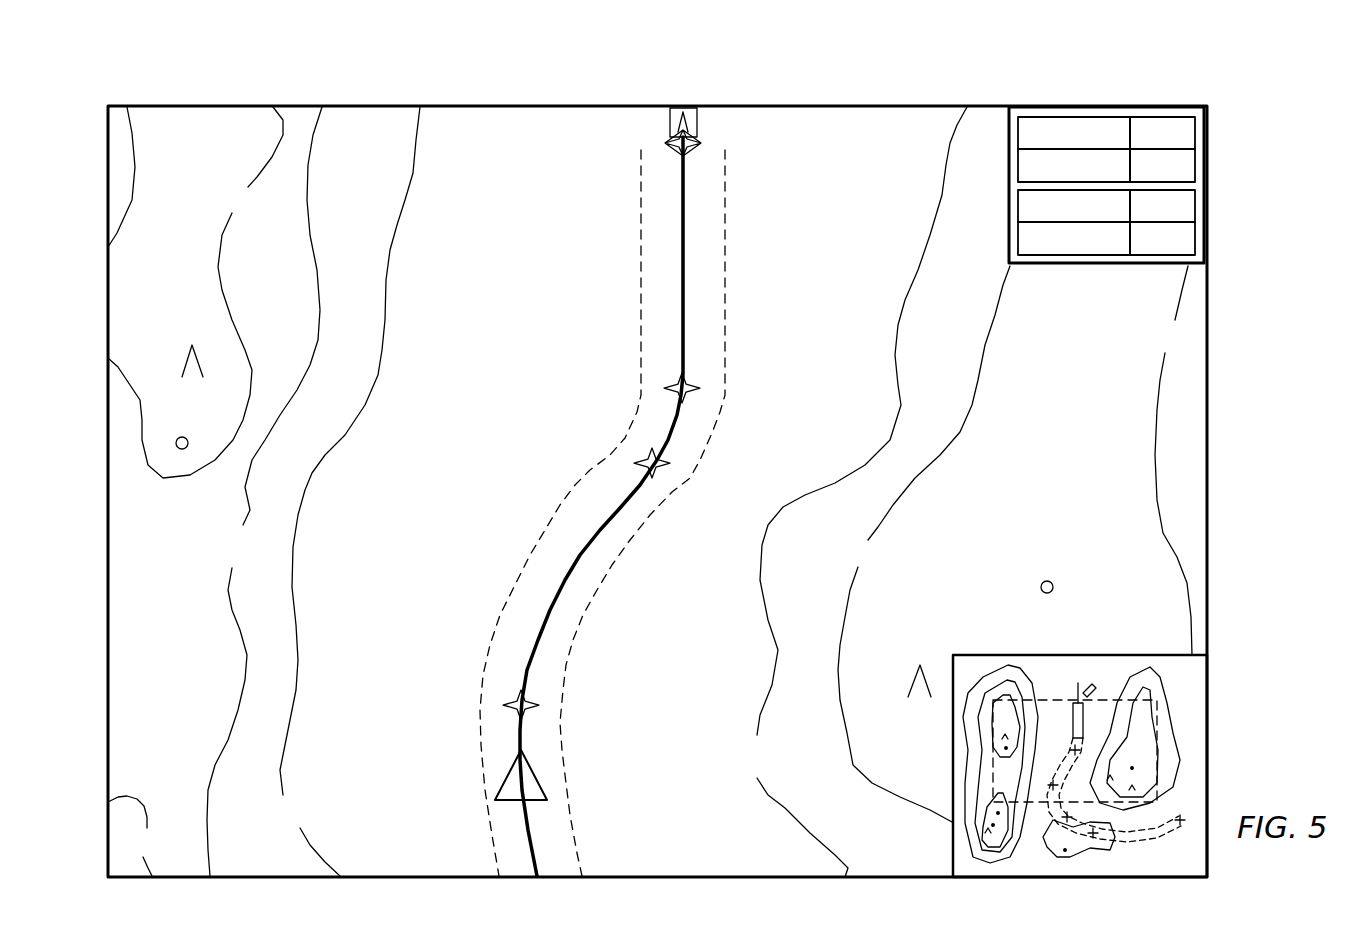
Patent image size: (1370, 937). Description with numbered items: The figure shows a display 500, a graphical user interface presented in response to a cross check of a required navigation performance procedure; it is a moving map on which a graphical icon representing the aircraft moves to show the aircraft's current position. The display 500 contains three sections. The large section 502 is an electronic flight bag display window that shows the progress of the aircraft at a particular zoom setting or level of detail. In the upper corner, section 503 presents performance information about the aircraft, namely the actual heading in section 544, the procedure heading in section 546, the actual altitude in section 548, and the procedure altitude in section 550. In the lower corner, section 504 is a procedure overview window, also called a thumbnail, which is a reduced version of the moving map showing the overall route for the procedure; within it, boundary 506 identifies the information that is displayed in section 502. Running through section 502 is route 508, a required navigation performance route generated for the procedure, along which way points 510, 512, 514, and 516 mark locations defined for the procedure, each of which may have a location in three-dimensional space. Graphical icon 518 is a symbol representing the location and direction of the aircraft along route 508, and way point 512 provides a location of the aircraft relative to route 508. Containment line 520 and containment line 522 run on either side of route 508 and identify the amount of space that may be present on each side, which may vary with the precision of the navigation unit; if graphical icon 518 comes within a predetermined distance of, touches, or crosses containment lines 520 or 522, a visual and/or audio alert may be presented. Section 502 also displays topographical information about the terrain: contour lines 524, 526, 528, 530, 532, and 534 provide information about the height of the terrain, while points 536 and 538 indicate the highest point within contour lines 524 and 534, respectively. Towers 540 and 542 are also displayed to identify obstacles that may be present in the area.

The display 500 is at (1275, 280).
The section 502 is at (824, 106).
The section 503 is at (1081, 211).
The section 504 is at (1080, 741).
The boundary 506 is at (1057, 700).
The route 508 is at (575, 575).
The way point 510 is at (527, 718).
The way point 512 is at (657, 475).
The way point 514 is at (683, 398).
The way point 516 is at (683, 128).
The graphical icon 518 is at (487, 792).
The containment line 520 is at (641, 268).
The containment line 522 is at (724, 227).
The contour line 524 is at (225, 298).
The contour line 526 is at (310, 228).
The contour line 528 is at (387, 273).
The contour line 530 is at (137, 799).
The contour line 532 is at (897, 356).
The contour line 534 is at (986, 346).
The point 536 is at (185, 449).
The point 538 is at (1040, 588).
The tower 540 is at (185, 362).
The tower 542 is at (913, 680).
The section 544 is at (1019, 132).
The section 546 is at (1019, 162).
The section 548 is at (1019, 205).
The section 550 is at (1019, 237).